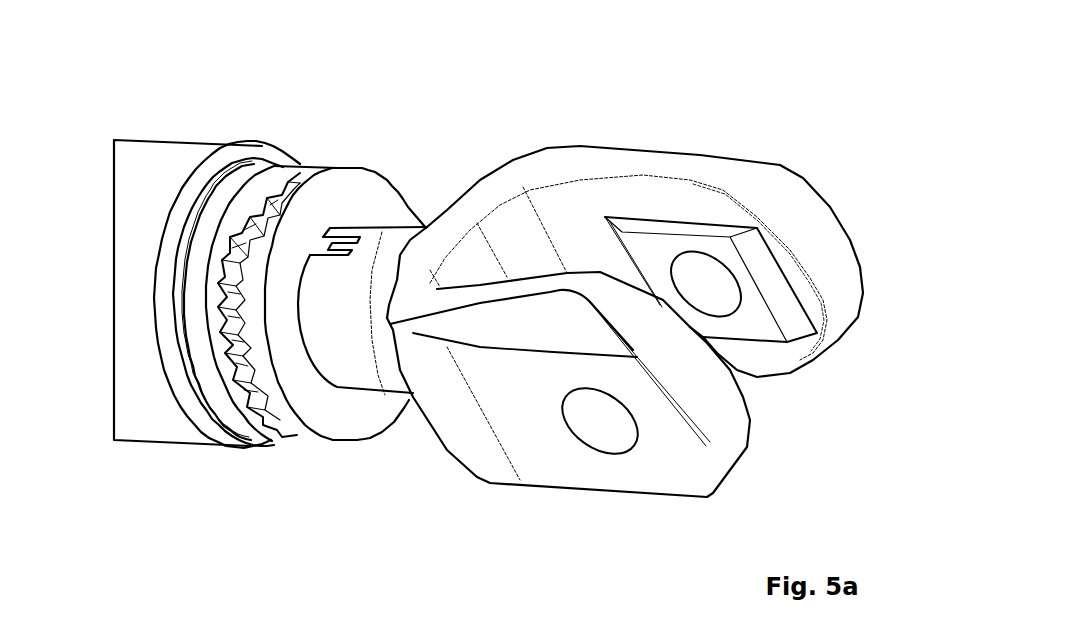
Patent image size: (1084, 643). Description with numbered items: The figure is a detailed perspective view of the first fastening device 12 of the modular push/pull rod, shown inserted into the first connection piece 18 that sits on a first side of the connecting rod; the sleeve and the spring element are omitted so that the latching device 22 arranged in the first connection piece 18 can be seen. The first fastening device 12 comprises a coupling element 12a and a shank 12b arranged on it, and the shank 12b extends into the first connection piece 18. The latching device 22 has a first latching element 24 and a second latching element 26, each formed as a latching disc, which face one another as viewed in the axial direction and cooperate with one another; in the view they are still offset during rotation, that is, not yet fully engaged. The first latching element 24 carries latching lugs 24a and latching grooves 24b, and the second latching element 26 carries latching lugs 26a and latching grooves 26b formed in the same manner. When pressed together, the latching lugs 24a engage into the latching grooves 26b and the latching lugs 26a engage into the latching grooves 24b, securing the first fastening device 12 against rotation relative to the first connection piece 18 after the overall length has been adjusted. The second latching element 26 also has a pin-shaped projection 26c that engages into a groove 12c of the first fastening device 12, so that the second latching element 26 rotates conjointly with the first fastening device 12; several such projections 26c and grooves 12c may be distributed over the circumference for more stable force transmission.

The first fastening device 12 is at (812, 172).
The coupling element 12a is at (838, 277).
The shank 12b is at (410, 230).
The groove 12c is at (383, 250).
The first connection piece 18 is at (156, 130).
The latching device 22 is at (322, 148).
The first latching element 24 is at (250, 173).
The latching lugs 24a is at (266, 400).
The latching grooves 24b is at (262, 390).
The second latching element 26 is at (360, 190).
The latching lugs 26a is at (257, 252).
The latching grooves 26b is at (262, 275).
The pin-shaped projection 26c is at (312, 248).